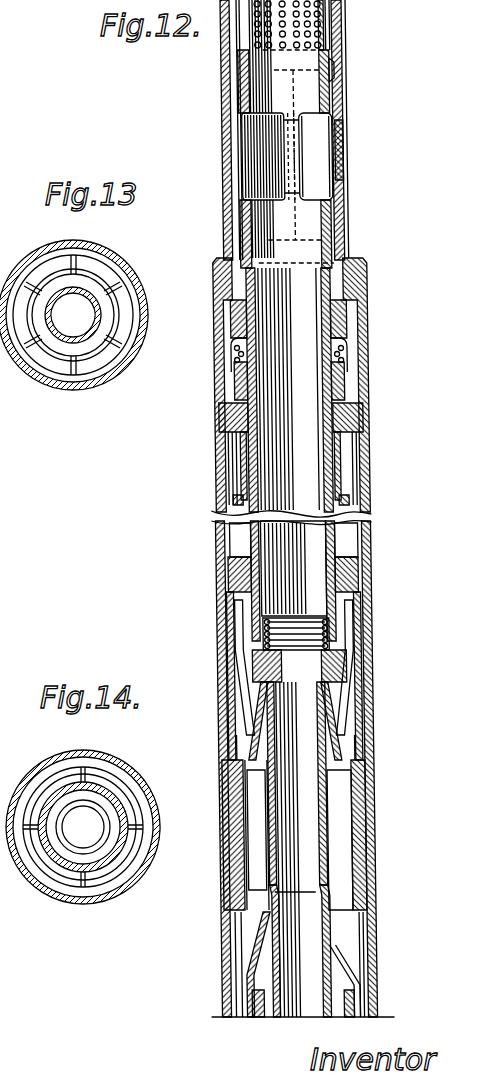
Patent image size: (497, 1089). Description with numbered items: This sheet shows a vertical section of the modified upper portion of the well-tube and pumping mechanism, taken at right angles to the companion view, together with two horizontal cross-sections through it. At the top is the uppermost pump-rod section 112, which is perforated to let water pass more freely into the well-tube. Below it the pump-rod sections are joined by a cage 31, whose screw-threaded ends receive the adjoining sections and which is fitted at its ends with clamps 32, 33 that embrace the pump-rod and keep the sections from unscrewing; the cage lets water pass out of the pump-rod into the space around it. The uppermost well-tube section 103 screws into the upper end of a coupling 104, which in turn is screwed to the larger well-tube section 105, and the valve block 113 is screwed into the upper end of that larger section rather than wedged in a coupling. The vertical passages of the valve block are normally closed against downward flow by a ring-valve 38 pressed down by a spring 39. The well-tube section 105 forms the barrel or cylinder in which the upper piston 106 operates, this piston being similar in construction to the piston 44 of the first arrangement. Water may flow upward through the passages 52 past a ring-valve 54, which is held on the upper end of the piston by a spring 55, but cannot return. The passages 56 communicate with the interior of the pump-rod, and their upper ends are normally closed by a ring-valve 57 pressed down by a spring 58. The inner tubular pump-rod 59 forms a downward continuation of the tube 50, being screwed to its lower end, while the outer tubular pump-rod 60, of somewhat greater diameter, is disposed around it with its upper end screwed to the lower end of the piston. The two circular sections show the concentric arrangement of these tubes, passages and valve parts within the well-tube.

In FIG. 12, the uppermost pump-rod section 112 is at (328, 30).
In FIG. 12, the clamp 32 is at (330, 60).
In FIG. 12, the uppermost well-tube section 103 is at (232, 122).
In FIG. 12, the cage 31 is at (325, 178).
In FIG. 12, the clamp 33 is at (330, 246).
In FIG. 12, the coupling 104 is at (362, 335).
In FIG. 12, the spring 39 is at (345, 360).
In FIG. 12, the ring-valve 38 is at (358, 392).
In FIG. 12, the valve block 113 is at (355, 437).
In FIG. 12, the well-tube section 105 is at (366, 493).
In FIG. 13, the well-tube section 105 is at (128, 300).
In FIG. 14, the well-tube section 105 is at (150, 855).
In FIG. 12, the spring 55 is at (343, 537).
In FIG. 12, the ring-valve 54 is at (356, 575).
In FIG. 12, the spring 58 is at (272, 638).
In FIG. 12, the ring-valve 57 is at (338, 660).
In FIG. 12, the piston 44 is at (356, 686).
In FIG. 13, the piston 44 is at (134, 322).
In FIG. 14, the piston 44 is at (135, 800).
In FIG. 12, the passages 52 is at (350, 712).
In FIG. 13, the passages 52 is at (110, 360).
In FIG. 14, the passages 52 is at (108, 778).
In FIG. 12, the tube 50 is at (315, 850).
In FIG. 13, the tube 50 is at (82, 298).
In FIG. 14, the tube 50 is at (108, 828).
In FIG. 12, the upper piston 106 is at (356, 812).
In FIG. 12, the outer tubular pump-rod 60 is at (260, 1017).
In FIG. 12, the inner tubular pump-rod 59 is at (325, 985).
In FIG. 13, the passages 56 is at (68, 352).